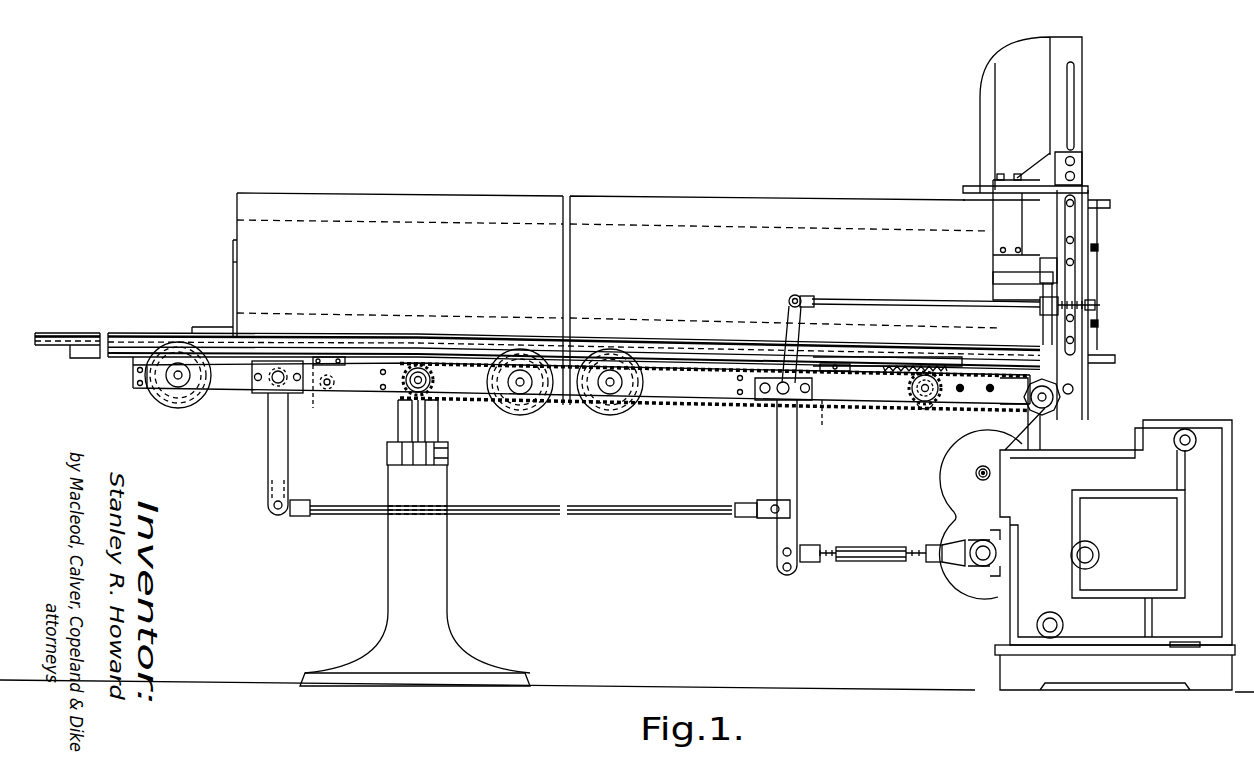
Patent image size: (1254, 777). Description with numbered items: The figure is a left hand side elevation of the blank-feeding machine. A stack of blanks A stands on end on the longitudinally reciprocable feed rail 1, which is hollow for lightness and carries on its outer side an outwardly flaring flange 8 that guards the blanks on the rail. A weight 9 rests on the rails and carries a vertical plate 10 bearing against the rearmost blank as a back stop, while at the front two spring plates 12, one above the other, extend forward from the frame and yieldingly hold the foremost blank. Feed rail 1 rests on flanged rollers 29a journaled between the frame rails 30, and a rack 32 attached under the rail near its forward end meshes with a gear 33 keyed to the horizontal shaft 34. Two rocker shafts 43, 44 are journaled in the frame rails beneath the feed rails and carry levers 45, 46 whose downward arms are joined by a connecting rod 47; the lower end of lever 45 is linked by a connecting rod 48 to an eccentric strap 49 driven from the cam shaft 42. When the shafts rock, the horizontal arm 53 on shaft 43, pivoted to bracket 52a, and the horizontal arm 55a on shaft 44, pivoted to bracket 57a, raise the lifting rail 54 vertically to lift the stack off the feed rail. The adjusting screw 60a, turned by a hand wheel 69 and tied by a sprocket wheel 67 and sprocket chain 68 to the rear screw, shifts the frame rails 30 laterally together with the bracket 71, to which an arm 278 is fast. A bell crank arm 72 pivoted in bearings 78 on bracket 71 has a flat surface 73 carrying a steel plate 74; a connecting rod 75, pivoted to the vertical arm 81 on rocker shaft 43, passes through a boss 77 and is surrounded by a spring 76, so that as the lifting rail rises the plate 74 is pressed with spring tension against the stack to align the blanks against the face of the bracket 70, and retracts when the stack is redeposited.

The stack of blanks A is at (733, 217).
The feed rail 1 is at (681, 360).
The outwardly flaring flange 8 is at (663, 347).
The weight 9 is at (212, 327).
The vertical plate 10 is at (232, 263).
The spring plate 12 is at (1100, 248).
The flanged rollers 29a is at (615, 410).
The frame rails 30 is at (240, 383).
The rack 32 is at (927, 362).
The gear 33 is at (913, 400).
The horizontal shaft 34 is at (926, 396).
The cam shaft 42 is at (970, 565).
The rocker shaft 43 is at (768, 405).
The rocker shaft 44 is at (278, 377).
The lever 45 is at (787, 480).
The lever 46 is at (277, 463).
The connecting rod 47 is at (633, 512).
The connecting rod 48 is at (863, 557).
The eccentric strap 49 is at (928, 560).
The bracket 52a is at (833, 366).
The horizontal arm 53 is at (825, 423).
The lifting rail 54 is at (127, 356).
The horizontal arm 55a is at (315, 395).
The bracket 57a is at (330, 356).
The adjusting screw 60a is at (1046, 398).
The sprocket wheel 67 is at (435, 386).
The sprocket chain 68 is at (723, 395).
The hand wheel 69 is at (1053, 405).
The bracket 70 is at (1010, 117).
The bracket 71 is at (1080, 219).
The bell crank arm 72 is at (1047, 281).
The flat surface 73 is at (1000, 261).
The steel plate 74 is at (1002, 221).
The connecting rod 75 is at (840, 298).
The spring 76 is at (1083, 298).
The boss 77 is at (1055, 307).
The bearings 78 is at (1050, 258).
The vertical arm 81 is at (780, 317).
The arm 278 is at (1014, 395).